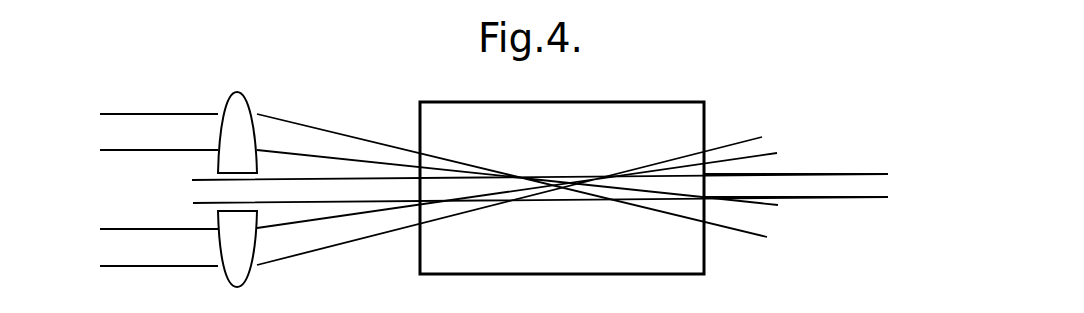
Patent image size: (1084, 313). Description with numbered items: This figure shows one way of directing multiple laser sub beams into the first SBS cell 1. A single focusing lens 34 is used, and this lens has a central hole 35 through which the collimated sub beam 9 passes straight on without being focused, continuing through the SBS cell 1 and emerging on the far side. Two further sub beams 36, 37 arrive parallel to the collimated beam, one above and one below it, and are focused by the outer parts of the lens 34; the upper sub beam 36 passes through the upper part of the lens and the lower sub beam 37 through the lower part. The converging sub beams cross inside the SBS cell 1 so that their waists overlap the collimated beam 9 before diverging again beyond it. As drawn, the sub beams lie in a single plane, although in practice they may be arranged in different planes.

The SBS cell 1 is at (629, 101).
The collimated sub beam 9 is at (840, 173).
The focusing lens 34 is at (243, 93).
The central hole 35 is at (210, 173).
The sub beam 36 is at (110, 128).
The sub beam 37 is at (162, 249).